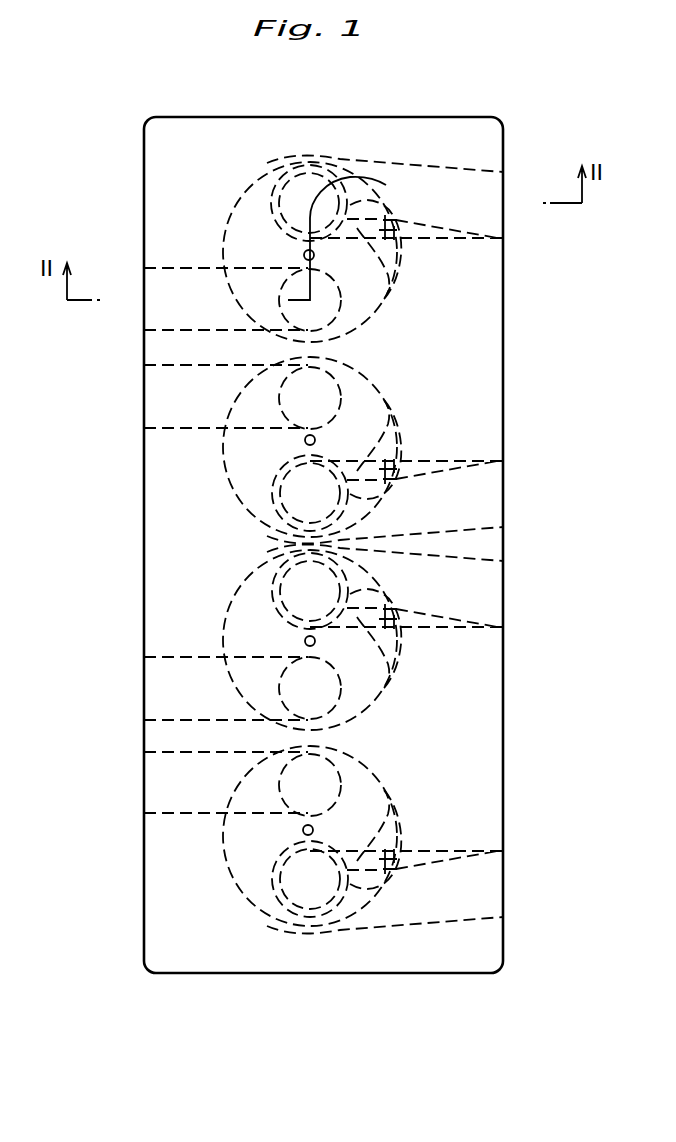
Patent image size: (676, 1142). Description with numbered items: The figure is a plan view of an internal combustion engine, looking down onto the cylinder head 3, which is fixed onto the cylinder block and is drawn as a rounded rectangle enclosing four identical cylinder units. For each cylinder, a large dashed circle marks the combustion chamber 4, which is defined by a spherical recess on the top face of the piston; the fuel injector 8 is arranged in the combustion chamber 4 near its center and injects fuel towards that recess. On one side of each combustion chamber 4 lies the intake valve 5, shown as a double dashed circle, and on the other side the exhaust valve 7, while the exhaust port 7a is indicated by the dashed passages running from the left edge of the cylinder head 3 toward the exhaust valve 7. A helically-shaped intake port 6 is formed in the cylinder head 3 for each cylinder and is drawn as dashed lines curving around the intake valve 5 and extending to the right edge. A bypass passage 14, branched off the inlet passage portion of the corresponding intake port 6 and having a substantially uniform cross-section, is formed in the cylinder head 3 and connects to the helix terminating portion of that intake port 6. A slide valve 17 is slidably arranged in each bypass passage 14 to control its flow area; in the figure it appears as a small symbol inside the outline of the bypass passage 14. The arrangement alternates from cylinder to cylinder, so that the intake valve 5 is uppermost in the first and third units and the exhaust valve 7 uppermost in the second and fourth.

The cylinder head 3 is at (183, 128).
The combustion chamber 4 is at (227, 232).
The intake valve 5 is at (278, 173).
The helically-shaped intake port 6 is at (452, 172).
The exhaust valve 7 is at (343, 318).
The exhaust port 7a is at (196, 268).
The fuel injector 8 is at (330, 258).
The bypass passage 14 is at (396, 273).
The slide valve 17 is at (410, 232).